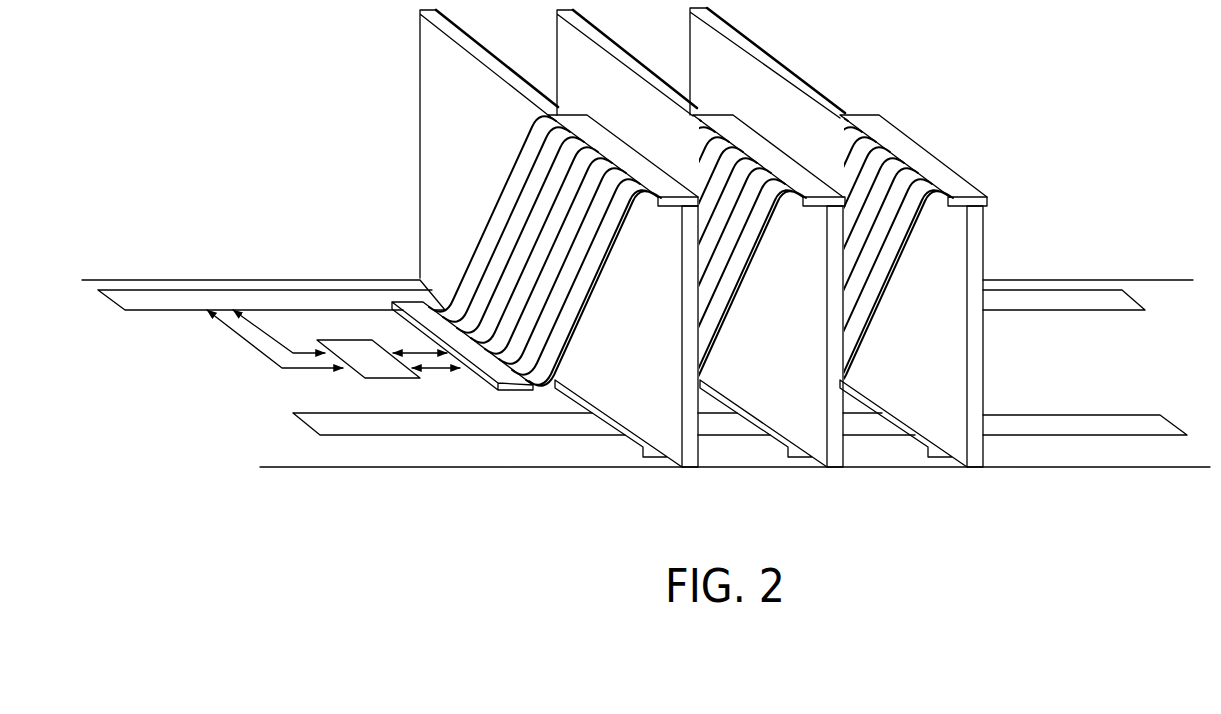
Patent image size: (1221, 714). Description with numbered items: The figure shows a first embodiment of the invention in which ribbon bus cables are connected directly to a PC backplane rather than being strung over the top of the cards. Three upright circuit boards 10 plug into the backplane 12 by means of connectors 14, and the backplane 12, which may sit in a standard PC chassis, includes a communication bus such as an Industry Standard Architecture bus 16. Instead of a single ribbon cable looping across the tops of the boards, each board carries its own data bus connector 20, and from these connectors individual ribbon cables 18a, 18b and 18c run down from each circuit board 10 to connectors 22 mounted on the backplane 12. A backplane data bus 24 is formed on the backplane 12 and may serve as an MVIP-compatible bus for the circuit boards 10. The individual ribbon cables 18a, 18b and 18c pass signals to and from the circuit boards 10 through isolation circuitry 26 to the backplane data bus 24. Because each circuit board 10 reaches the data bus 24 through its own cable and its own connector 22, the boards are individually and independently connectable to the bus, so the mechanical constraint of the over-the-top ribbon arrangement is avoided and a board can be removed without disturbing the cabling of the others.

The circuit boards 10 is at (430, 48).
The backplane 12 is at (233, 406).
The connectors 14 is at (632, 447).
The Industry Standard Architecture (ISA) bus 16 is at (300, 421).
The ribbon cable 18a is at (576, 303).
The ribbon cable 18b is at (732, 268).
The ribbon cable 18c is at (880, 245).
The data bus connectors 20 is at (610, 143).
The connectors 22 is at (410, 306).
The backplane data bus 24 is at (197, 297).
The isolation circuitry 26 is at (370, 367).